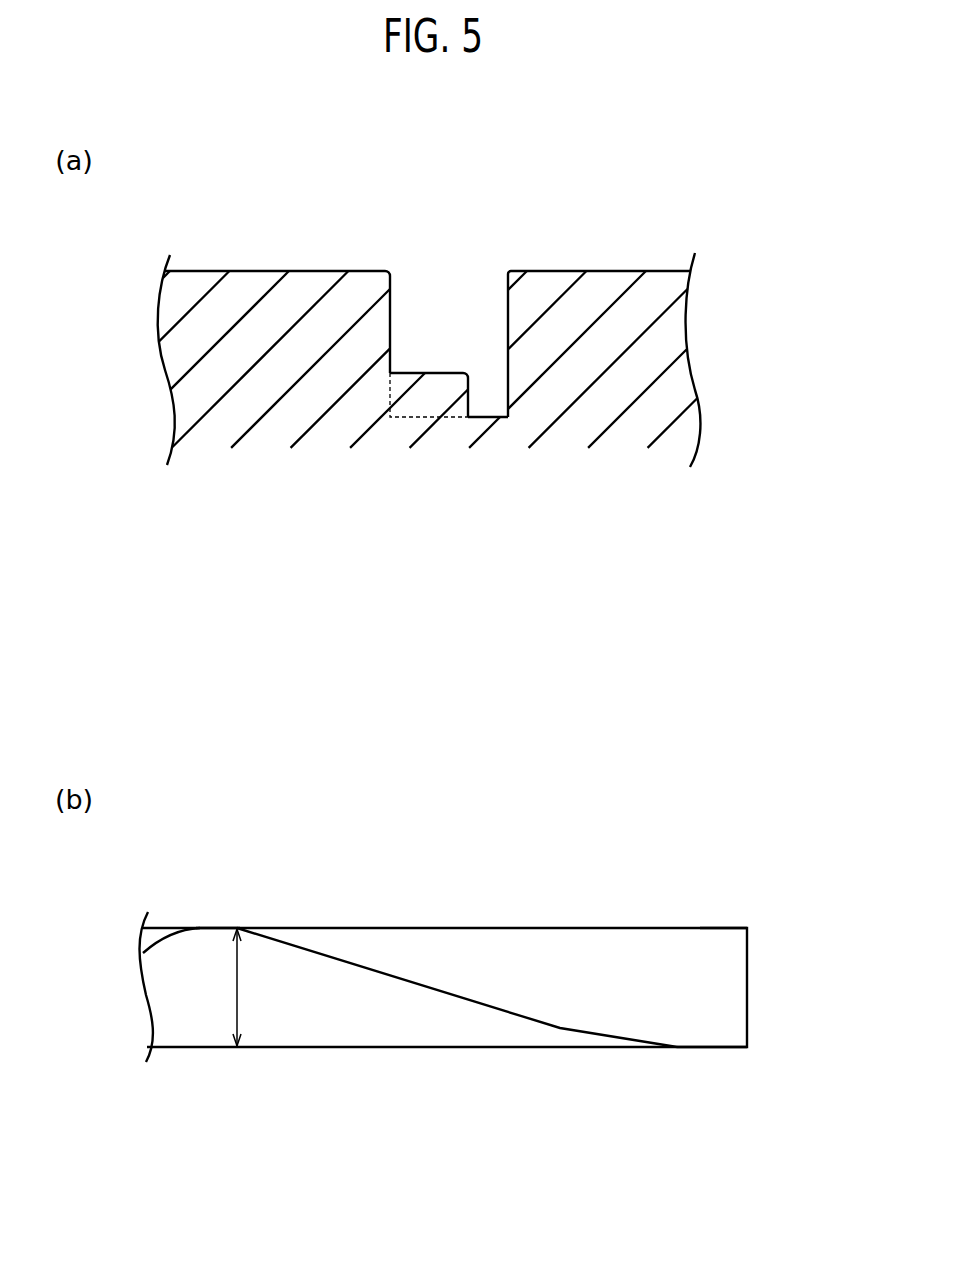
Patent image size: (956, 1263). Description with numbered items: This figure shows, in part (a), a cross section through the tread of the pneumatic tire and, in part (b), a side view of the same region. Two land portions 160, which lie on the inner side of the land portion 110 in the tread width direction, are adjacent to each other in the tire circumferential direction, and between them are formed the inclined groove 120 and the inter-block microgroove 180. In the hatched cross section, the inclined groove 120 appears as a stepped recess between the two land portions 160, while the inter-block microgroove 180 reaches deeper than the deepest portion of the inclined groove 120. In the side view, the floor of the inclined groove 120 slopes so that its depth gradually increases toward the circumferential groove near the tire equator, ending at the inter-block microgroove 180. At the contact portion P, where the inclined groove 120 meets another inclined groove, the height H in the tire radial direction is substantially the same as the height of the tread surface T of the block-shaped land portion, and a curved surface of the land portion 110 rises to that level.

The land portion 110 is at (170, 928).
The inclined groove 120 is at (428, 352).
The land portion 160 is at (244, 268).
The inter-block microgroove 180 is at (494, 412).
The contact portion P is at (212, 927).
The tread surface T is at (716, 927).
The height H is at (240, 985).